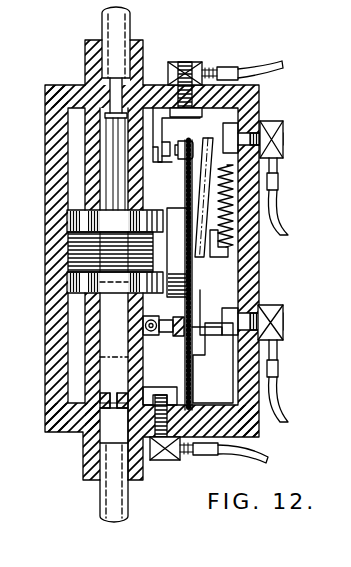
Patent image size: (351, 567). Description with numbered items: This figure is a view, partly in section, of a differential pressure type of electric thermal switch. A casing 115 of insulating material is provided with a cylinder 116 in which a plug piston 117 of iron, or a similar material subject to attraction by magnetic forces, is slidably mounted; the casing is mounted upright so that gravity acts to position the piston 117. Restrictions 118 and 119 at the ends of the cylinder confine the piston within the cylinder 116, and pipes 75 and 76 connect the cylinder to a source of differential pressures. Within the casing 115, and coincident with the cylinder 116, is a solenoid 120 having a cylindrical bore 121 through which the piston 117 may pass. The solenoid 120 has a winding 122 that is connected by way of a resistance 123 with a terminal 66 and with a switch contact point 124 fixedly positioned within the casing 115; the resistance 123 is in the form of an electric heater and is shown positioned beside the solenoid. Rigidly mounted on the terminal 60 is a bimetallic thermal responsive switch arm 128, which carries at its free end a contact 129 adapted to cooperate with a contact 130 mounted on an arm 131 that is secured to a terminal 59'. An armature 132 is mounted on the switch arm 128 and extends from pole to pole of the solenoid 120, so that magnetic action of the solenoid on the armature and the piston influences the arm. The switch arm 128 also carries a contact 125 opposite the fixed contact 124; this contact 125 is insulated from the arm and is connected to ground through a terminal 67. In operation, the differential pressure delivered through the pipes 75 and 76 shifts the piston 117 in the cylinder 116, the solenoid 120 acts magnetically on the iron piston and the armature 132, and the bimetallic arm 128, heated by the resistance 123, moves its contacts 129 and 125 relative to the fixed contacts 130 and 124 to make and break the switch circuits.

The pipe 75 is at (130, 24).
The restriction 119 is at (88, 83).
The plug piston 117 is at (105, 134).
The arm 131 is at (156, 87).
The terminal 59' is at (225, 76).
The contact 129 is at (180, 141).
The contact 130 is at (157, 160).
The terminal 66 is at (283, 140).
The solenoid 120 is at (82, 223).
The winding 122 is at (68, 258).
The cylindrical bore 121 is at (45, 286).
The casing 115 is at (58, 366).
The cylinder 116 is at (105, 379).
The restriction 118 is at (97, 441).
The pipe 76 is at (128, 504).
The armature 132 is at (182, 263).
The contact 125 is at (188, 310).
The switch contact point 124 is at (158, 336).
The bimetallic thermal responsive switch arm 128 is at (193, 380).
The resistance 123 is at (258, 230).
The terminal 67 is at (283, 325).
The terminal 60 is at (172, 460).